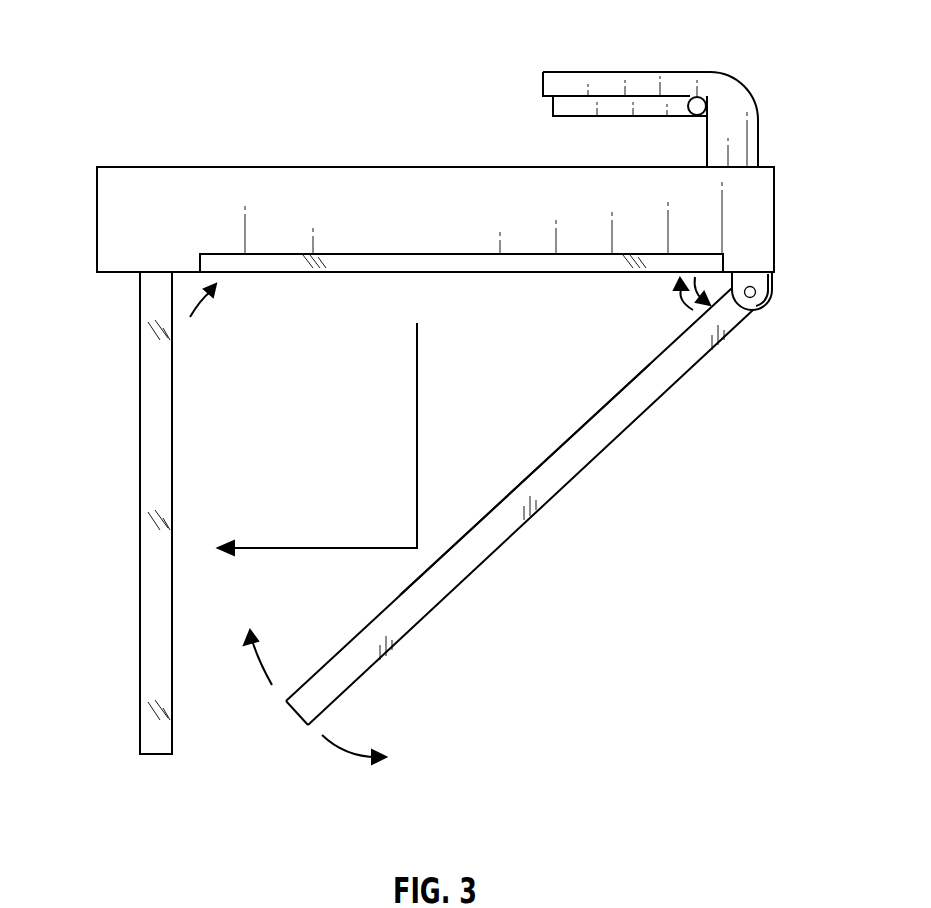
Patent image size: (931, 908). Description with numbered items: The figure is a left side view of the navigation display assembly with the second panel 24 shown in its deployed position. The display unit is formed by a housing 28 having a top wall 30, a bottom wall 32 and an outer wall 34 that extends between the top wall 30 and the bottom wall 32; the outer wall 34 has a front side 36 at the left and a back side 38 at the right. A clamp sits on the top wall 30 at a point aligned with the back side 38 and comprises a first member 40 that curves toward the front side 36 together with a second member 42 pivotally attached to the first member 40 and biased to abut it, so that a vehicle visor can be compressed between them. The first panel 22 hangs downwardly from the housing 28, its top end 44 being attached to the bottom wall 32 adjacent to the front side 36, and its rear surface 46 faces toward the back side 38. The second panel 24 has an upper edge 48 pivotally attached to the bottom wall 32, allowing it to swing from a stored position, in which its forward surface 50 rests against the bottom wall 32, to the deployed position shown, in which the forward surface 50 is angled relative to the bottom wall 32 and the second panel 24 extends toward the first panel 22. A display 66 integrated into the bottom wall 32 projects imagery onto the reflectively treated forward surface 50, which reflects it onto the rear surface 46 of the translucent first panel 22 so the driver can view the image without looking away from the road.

The first panel 22 is at (140, 752).
The second panel 24 is at (307, 725).
The housing 28 is at (100, 167).
The top wall 30 is at (305, 167).
The bottom wall 32 is at (117, 273).
The outer wall 34 is at (410, 175).
The front side 36 is at (97, 214).
The back side 38 is at (774, 221).
The first member 40 is at (645, 72).
The second member 42 is at (571, 118).
The top end 44 is at (148, 272).
The rear surface 46 is at (172, 478).
The upper edge 48 is at (756, 304).
The forward surface 50 is at (548, 458).
The display 66 is at (651, 273).